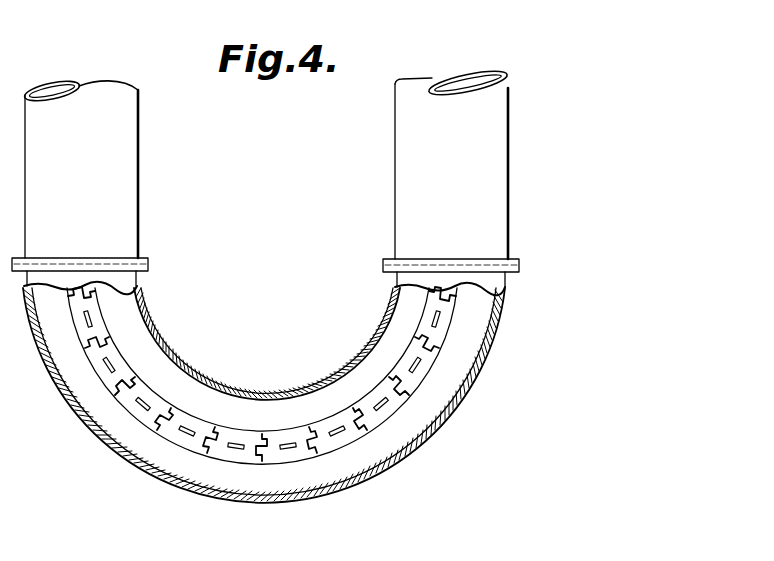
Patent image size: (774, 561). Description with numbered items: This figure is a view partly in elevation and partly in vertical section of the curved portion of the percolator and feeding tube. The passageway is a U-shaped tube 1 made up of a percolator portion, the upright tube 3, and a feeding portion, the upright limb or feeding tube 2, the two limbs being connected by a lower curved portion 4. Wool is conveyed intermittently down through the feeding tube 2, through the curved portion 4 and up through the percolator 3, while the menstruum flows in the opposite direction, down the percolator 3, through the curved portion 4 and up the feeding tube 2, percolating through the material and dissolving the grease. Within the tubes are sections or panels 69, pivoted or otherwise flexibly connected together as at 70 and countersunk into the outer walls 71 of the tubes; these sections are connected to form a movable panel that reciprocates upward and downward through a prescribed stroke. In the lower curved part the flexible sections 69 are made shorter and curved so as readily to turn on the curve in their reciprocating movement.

The U-shaped tube 1 is at (385, 222).
The feeding tube 2 is at (497, 163).
The percolator tube 3 is at (128, 161).
The lower curved portion 4 is at (202, 385).
The sections or panels 69 is at (337, 418).
The flexible connections 70 is at (393, 362).
The outer walls 71 is at (348, 365).